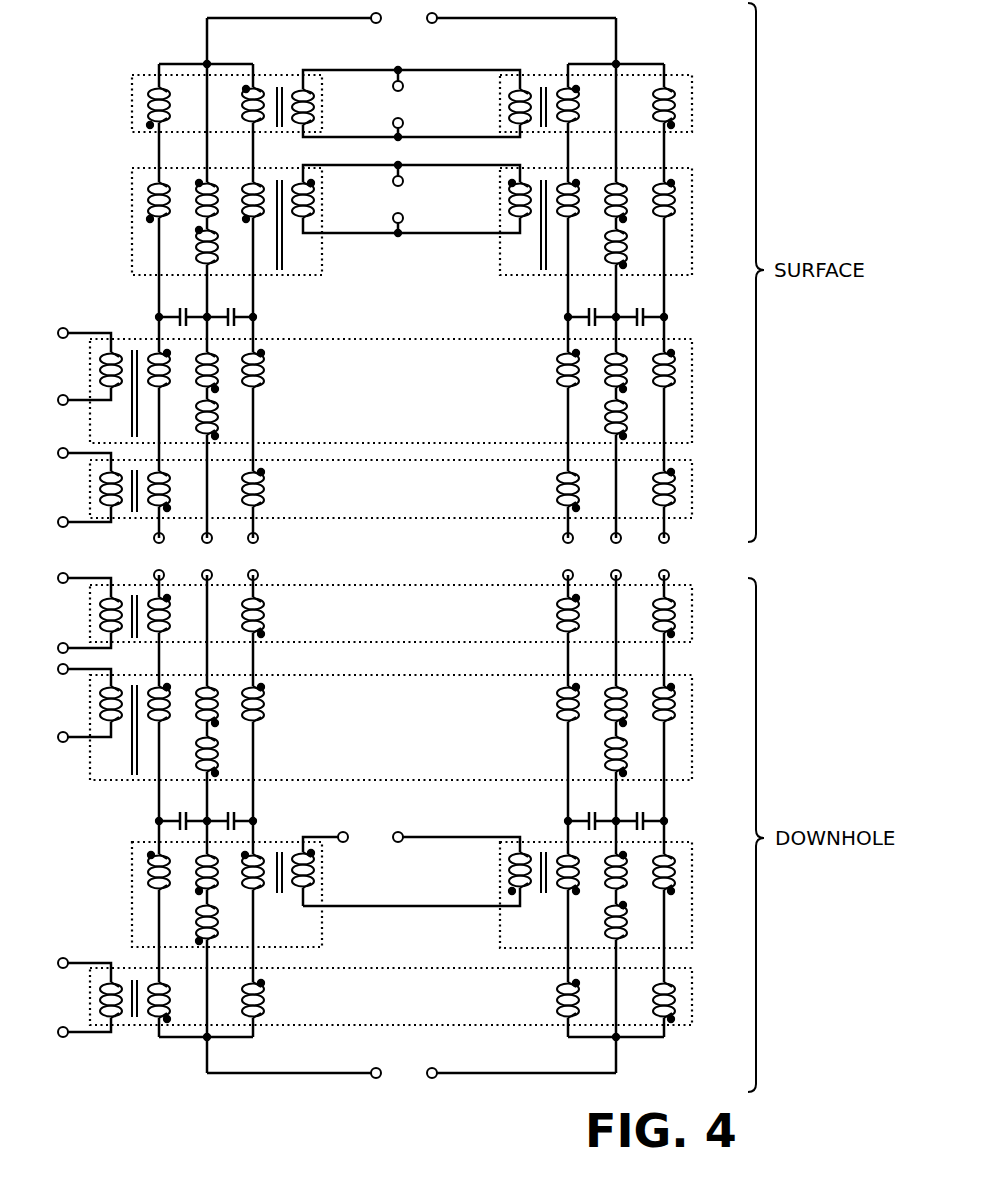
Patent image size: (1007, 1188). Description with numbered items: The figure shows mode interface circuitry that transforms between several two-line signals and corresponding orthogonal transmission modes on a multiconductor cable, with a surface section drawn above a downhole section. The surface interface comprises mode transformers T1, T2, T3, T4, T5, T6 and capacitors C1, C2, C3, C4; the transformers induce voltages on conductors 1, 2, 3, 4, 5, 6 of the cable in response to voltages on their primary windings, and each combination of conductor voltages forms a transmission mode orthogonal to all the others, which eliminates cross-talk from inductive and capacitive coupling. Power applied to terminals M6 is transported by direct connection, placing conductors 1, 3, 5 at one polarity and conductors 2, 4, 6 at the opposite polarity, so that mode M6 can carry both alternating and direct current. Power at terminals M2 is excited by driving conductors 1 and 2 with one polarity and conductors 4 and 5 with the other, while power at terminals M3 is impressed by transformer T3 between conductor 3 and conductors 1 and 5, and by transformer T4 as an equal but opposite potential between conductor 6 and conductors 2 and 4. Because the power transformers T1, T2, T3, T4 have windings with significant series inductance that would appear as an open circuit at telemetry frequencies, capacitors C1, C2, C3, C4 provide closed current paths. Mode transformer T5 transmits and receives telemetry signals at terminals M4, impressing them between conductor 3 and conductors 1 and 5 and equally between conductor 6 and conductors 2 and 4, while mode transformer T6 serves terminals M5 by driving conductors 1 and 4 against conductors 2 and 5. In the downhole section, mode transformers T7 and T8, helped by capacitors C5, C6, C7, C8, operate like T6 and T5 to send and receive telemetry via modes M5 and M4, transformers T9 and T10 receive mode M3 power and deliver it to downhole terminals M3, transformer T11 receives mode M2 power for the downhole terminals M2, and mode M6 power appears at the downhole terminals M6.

The mode transformer T1 is at (130, 122).
The mode transformer T2 is at (692, 122).
The mode transformer T3 is at (130, 215).
The mode transformer T4 is at (692, 215).
The mode transformer T5 is at (692, 383).
The mode transformer T6 is at (692, 500).
The mode transformer T7 is at (692, 632).
The mode transformer T8 is at (692, 720).
The mode transformer T9 is at (130, 877).
The mode transformer T10 is at (692, 877).
The mode transformer T11 is at (692, 1015).
The capacitor C1 is at (182, 306).
The capacitor C2 is at (230, 306).
The capacitor C3 is at (591, 306).
The capacitor C4 is at (640, 306).
The capacitor C5 is at (182, 809).
The capacitor C6 is at (230, 809).
The capacitor C7 is at (591, 809).
The capacitor C8 is at (640, 809).
The terminals M2 is at (282, 552).
The terminals M3 is at (417, 534).
The terminals M4 is at (83, 535).
The terminals M5 is at (83, 550).
The terminals M6 is at (411, 545).
The conductor 1 is at (158, 556).
The conductor 2 is at (663, 556).
The conductor 3 is at (206, 556).
The conductor 4 is at (567, 556).
The conductor 5 is at (252, 556).
The conductor 6 is at (615, 556).